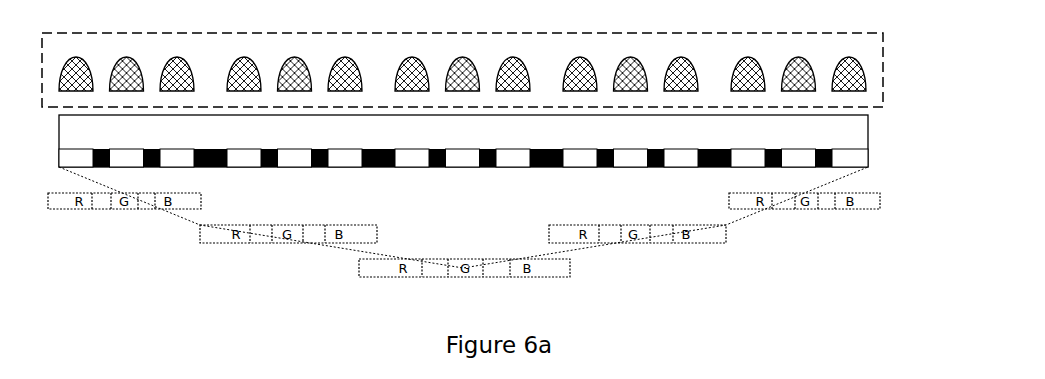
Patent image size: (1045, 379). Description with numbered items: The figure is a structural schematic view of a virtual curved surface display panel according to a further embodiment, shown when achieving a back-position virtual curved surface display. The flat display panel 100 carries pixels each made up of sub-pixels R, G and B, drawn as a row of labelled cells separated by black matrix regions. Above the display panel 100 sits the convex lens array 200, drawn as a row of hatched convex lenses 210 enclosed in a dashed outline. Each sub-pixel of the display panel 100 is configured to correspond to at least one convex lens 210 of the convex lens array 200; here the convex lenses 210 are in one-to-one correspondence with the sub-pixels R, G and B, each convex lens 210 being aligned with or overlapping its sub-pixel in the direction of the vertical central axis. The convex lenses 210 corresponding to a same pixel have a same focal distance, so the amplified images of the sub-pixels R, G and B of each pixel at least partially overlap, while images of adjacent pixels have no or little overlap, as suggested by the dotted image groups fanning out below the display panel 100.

The display panel 100 is at (868, 157).
The convex lens array 200 is at (491, 58).
The convex lens 210 is at (458, 60).